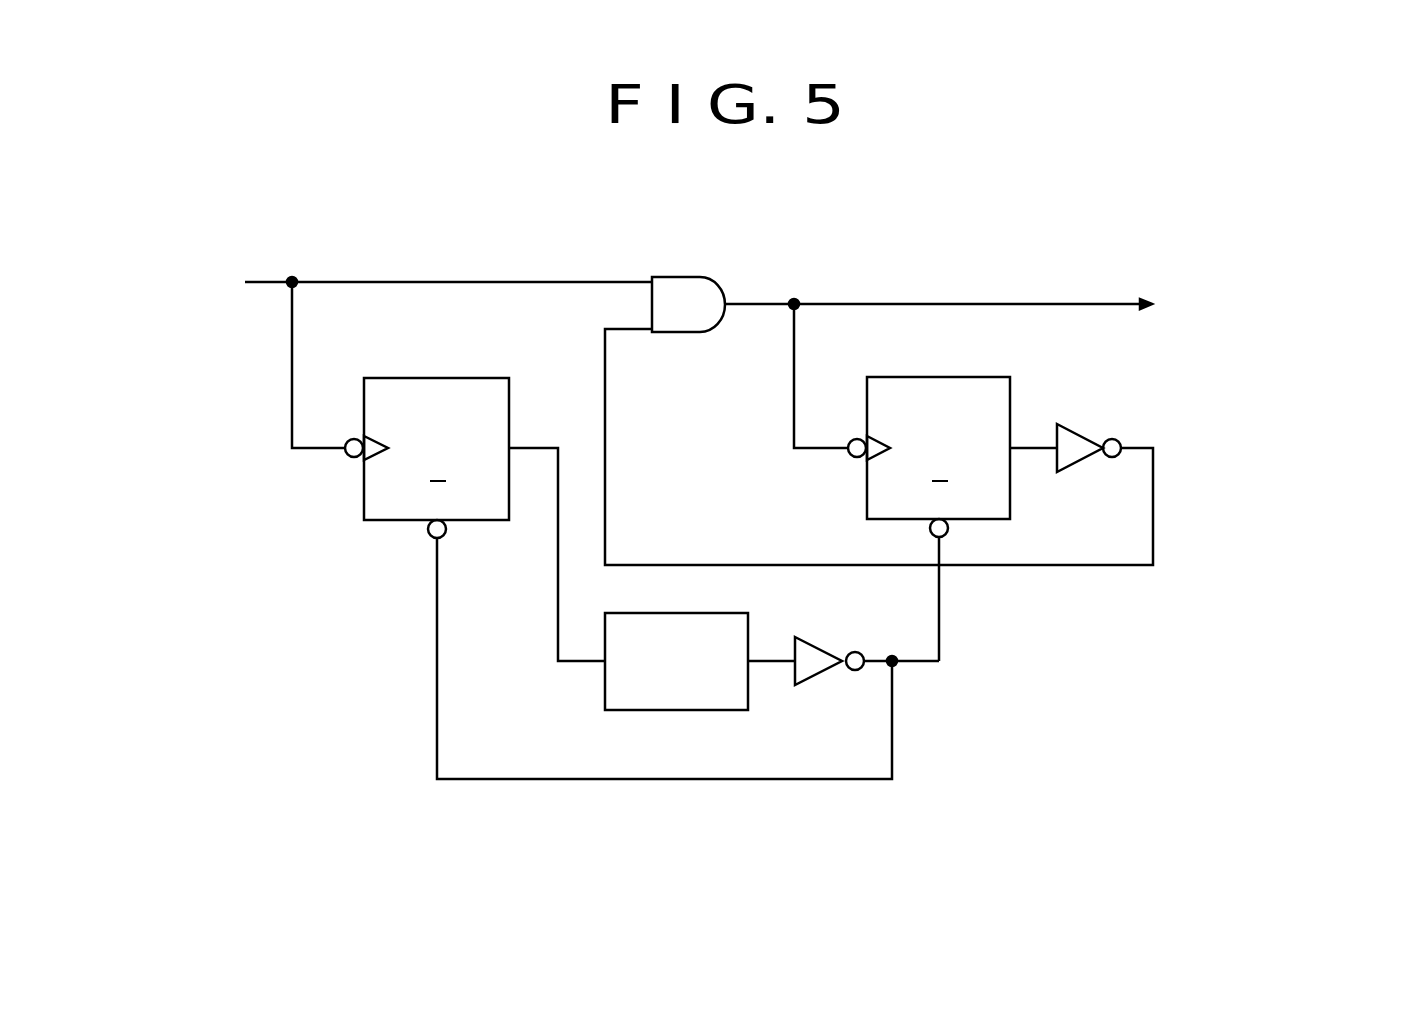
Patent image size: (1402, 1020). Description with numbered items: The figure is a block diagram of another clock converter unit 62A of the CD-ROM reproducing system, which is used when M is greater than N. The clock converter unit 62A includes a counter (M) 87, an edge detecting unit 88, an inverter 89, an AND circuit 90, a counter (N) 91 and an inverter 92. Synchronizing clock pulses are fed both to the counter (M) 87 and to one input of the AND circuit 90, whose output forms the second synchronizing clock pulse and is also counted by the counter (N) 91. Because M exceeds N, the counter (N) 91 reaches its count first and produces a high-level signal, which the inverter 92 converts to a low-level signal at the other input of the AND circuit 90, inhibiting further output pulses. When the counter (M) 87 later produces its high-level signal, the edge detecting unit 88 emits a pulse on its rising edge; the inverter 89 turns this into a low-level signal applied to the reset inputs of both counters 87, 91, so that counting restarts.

The clock converter unit 62A is at (565, 203).
The counter (M) 87 is at (403, 377).
The edge detecting unit 88 is at (651, 712).
The inverter 89 is at (798, 636).
The AND circuit 90 is at (687, 276).
The counter (N) 91 is at (907, 376).
The inverter 92 is at (1058, 423).